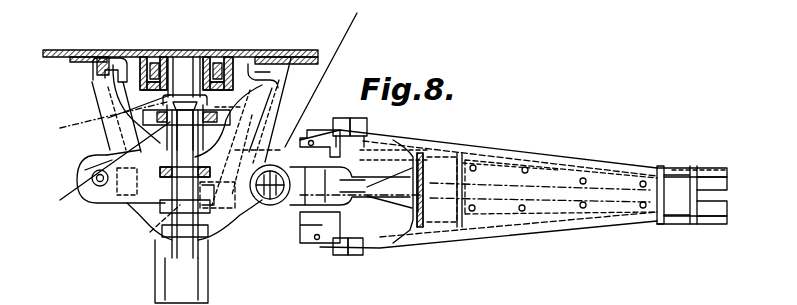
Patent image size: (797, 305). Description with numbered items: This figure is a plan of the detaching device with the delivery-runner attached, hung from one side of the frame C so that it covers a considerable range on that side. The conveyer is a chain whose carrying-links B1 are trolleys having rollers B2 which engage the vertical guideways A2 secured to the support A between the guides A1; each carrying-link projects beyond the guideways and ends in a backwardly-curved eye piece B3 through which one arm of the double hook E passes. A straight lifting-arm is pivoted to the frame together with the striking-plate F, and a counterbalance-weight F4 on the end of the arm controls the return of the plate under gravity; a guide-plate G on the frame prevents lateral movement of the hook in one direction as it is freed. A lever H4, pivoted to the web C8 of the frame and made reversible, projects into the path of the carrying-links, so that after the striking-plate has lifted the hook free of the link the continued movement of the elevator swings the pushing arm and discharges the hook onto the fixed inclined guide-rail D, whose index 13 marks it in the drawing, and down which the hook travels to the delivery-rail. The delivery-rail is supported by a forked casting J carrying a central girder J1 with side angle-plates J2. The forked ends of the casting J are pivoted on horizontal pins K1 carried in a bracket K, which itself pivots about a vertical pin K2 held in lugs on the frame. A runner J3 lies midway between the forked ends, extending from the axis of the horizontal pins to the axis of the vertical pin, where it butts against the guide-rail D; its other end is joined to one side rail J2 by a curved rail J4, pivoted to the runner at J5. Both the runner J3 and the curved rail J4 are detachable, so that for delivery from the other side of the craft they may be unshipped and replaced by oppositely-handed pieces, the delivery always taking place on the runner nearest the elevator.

The support A is at (187, 75).
The guides A1 is at (95, 72).
The vertical guideways A2 is at (127, 54).
The carrying-link B1 is at (108, 118).
The rollers B2 is at (155, 62).
The eye piece B3 is at (190, 100).
The frame C is at (150, 195).
The web C8 is at (143, 280).
The guide-rail D is at (117, 185).
The double hook E is at (93, 182).
The striking-plate F is at (170, 115).
The counterbalance-weight F4 is at (146, 244).
The guide-plate G is at (60, 130).
The lever H4 is at (341, 73).
The forked casting J is at (493, 250).
The central girder J1 is at (674, 172).
The side angle-plates J2 is at (695, 170).
The runner J3 is at (300, 210).
The curved rail J4 is at (408, 143).
The pivot J5 is at (322, 244).
The bracket K is at (292, 205).
The horizontal pins K1 is at (347, 116).
The vertical pin K2 is at (250, 210).
The pin 13 is at (256, 210).